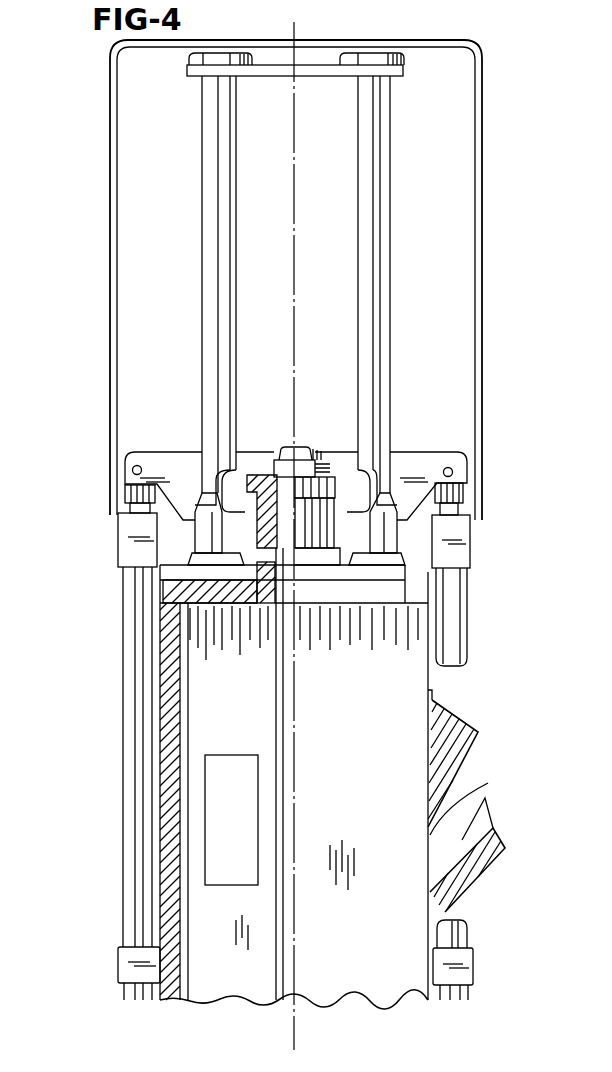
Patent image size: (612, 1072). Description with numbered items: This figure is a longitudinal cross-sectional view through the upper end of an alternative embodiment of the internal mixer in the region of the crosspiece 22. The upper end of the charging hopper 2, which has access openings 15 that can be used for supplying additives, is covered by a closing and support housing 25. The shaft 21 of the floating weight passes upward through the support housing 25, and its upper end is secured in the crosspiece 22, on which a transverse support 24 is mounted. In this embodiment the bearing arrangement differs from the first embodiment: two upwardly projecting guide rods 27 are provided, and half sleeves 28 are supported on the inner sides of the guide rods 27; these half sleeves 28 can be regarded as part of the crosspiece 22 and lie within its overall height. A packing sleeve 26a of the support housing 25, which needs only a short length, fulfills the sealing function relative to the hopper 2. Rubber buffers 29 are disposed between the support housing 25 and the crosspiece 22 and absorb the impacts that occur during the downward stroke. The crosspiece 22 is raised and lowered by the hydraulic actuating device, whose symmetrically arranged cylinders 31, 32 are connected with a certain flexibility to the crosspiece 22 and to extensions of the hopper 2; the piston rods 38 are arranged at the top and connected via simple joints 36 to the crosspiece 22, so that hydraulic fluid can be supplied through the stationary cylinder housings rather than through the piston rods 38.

The charging hopper 2 is at (188, 1000).
The access openings 15 is at (472, 786).
The shaft 21 is at (292, 962).
The crosspiece 22 is at (316, 437).
The transverse support 24 is at (458, 452).
The closing and support housing 25 is at (165, 590).
The packing sleeve 26a is at (276, 592).
The guide rods 27 is at (203, 183).
The half sleeves 28 is at (257, 470).
The rubber buffers 29 is at (125, 495).
The cylinder 31 is at (128, 630).
The cylinder 32 is at (468, 625).
The joints 36 is at (132, 468).
The piston rods 38 is at (118, 522).